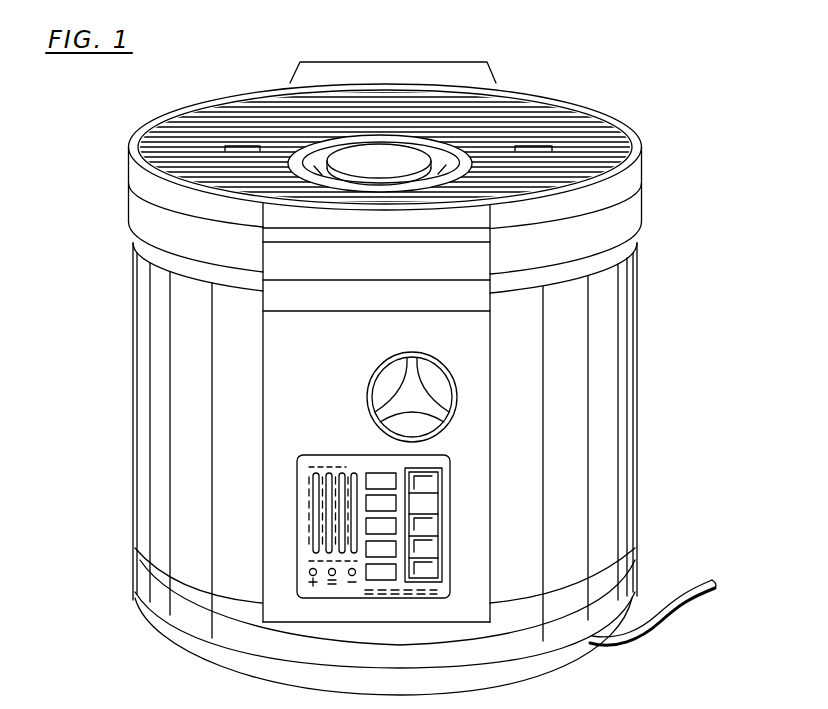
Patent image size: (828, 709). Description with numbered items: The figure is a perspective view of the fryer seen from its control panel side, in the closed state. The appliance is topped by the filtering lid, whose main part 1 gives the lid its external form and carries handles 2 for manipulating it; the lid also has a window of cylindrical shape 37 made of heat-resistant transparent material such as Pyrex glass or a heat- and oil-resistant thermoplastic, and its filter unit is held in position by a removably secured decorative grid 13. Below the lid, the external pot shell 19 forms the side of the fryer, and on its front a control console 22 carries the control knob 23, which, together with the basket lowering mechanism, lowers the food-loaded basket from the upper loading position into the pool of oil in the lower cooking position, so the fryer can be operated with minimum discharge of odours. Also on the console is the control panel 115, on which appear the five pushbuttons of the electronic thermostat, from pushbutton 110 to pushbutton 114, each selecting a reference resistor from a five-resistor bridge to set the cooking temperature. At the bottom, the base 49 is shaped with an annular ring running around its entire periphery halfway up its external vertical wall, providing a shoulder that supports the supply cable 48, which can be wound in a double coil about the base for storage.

The main part 1 is at (128, 182).
The handles 2 is at (297, 64).
The decorative grid 13 is at (638, 118).
The external pot shell 19 is at (608, 332).
The control console 22 is at (283, 378).
The control knob 23 is at (440, 393).
The window of cylindrical shape 37 is at (405, 163).
The supply cable 48 is at (664, 614).
The base 49 is at (632, 583).
The pushbutton 110 is at (432, 573).
The pushbutton 114 is at (432, 479).
The control panel 115 is at (298, 520).